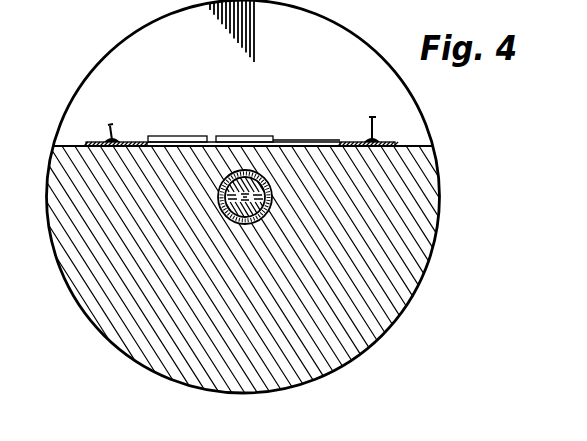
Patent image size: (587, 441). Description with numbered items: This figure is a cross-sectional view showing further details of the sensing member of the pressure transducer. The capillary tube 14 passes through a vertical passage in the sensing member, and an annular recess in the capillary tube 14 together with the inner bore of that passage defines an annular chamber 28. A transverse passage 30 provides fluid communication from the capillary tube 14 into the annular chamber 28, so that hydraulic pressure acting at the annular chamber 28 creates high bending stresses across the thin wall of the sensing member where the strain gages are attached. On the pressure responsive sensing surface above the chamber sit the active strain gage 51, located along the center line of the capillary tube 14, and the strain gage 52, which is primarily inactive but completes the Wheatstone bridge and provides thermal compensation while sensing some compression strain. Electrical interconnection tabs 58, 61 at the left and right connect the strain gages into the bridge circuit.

The capillary tube 14 is at (267, 181).
The annular chamber 28 is at (218, 200).
The transverse passage 30 is at (270, 216).
The active strain gage 51 is at (247, 136).
The strain gage 52 is at (189, 136).
The electrical interconnection tab 58 is at (92, 142).
The electrical interconnection tab 61 is at (397, 142).